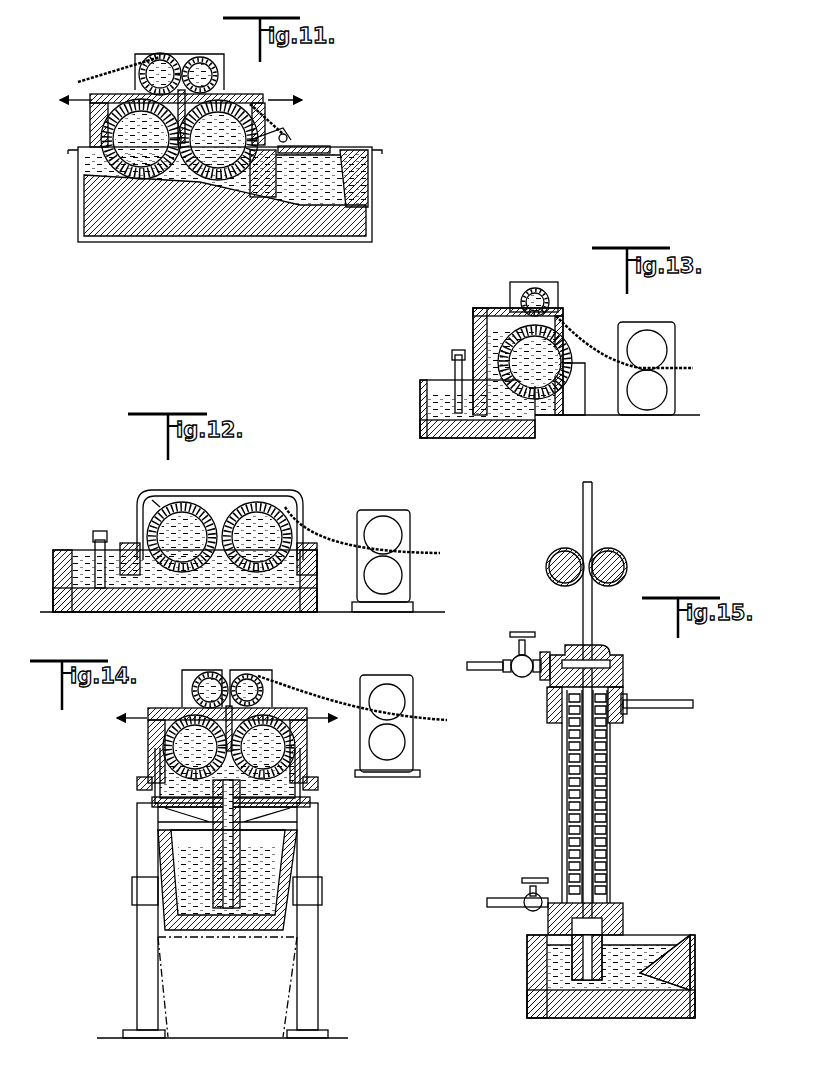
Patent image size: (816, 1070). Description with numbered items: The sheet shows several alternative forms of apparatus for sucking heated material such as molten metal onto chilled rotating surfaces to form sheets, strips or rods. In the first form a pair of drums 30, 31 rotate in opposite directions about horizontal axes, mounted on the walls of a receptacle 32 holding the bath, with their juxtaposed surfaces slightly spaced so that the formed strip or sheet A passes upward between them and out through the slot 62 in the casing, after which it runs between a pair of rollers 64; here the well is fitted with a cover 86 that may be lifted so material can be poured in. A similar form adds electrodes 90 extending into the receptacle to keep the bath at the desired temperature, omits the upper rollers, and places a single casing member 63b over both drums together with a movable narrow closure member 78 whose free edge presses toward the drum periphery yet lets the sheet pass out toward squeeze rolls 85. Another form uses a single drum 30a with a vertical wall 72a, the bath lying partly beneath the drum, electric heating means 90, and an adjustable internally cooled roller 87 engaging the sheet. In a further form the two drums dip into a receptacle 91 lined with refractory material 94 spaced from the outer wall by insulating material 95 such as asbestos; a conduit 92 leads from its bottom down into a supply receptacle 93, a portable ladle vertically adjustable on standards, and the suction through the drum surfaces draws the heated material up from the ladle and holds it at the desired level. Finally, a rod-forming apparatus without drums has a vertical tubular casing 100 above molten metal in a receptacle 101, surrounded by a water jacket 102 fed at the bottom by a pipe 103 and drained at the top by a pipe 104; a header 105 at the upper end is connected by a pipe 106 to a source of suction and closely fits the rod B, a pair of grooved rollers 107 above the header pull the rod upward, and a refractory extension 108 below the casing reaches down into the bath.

In FIG. 11, the drum 30 is at (100, 118).
In FIG. 12, the drum 30 is at (185, 505).
In FIG. 14, the drum 30 is at (178, 715).
In FIG. 11, the drum 31 is at (266, 128).
In FIG. 12, the drum 31 is at (278, 500).
In FIG. 14, the drum 31 is at (283, 712).
In FIG. 11, the receptacle 32 is at (216, 242).
In FIG. 11, the slot 62 is at (102, 140).
In FIG. 12, the slot 62 is at (155, 500).
In FIG. 11, the rollers 64 is at (198, 60).
In FIG. 14, the rollers 64 is at (245, 672).
In FIG. 11, the cover 86 is at (328, 146).
In FIG. 11, the strip or sheet A is at (119, 66).
In FIG. 13, the adjustable internally cooled roller 87 is at (540, 290).
In FIG. 13, the wall 72a is at (473, 322).
In FIG. 13, the electrodes 90 is at (455, 375).
In FIG. 12, the electrodes 90 is at (97, 545).
In FIG. 13, the movable closure member 78 is at (565, 336).
In FIG. 12, the movable closure member 78 is at (300, 518).
In FIG. 13, the squeeze rolls 85 is at (655, 385).
In FIG. 12, the squeeze rolls 85 is at (390, 572).
In FIG. 14, the squeeze rolls 85 is at (395, 740).
In FIG. 13, the drum 30a is at (543, 370).
In FIG. 12, the casing member 63b is at (233, 490).
In FIG. 14, the receptacle 91 is at (300, 766).
In FIG. 14, the conduit 92 is at (285, 833).
In FIG. 14, the supply receptacle 93 is at (160, 855).
In FIG. 14, the refractory material 94 is at (140, 779).
In FIG. 14, the insulating material 95 is at (156, 773).
In FIG. 15, the rod B is at (594, 616).
In FIG. 15, the vertical tubular casing 100 is at (567, 797).
In FIG. 15, the receptacle 101 is at (527, 962).
In FIG. 15, the water jacket 102 is at (562, 772).
In FIG. 15, the pipe 103 is at (500, 896).
In FIG. 15, the pipe 104 is at (678, 709).
In FIG. 15, the header 105 is at (625, 668).
In FIG. 15, the pipe 106 is at (488, 671).
In FIG. 15, the rollers 107 is at (552, 553).
In FIG. 15, the extension 108 is at (575, 975).